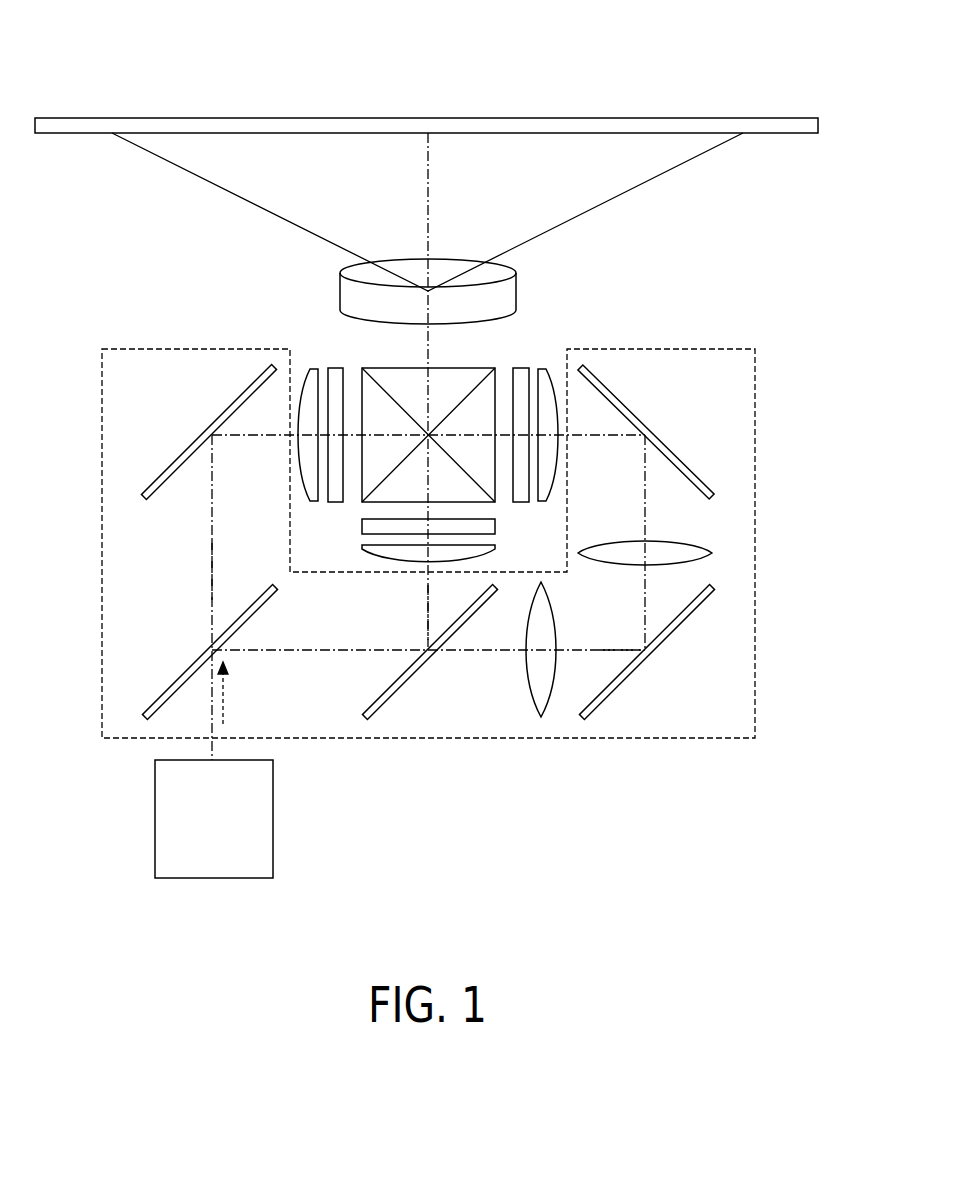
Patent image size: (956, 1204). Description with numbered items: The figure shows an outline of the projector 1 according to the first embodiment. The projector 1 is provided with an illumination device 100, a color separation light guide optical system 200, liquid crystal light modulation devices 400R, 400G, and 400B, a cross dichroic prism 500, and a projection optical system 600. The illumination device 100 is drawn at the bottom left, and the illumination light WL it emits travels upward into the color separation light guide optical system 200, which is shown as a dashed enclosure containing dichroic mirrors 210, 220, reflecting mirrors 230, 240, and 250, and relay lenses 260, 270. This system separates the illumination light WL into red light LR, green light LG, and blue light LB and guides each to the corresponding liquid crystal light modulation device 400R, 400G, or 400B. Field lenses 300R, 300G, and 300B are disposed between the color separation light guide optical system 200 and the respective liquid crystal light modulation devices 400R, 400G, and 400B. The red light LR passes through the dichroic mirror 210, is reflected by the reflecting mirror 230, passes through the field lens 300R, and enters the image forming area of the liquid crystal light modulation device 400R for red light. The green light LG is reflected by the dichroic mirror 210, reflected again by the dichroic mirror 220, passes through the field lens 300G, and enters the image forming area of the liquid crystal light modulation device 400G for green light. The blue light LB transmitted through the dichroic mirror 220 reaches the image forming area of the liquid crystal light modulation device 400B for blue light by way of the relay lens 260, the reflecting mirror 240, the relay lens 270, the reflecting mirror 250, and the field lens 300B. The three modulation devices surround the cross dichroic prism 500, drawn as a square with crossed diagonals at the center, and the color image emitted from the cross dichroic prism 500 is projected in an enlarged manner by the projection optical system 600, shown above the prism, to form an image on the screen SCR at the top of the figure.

The projector 1 is at (773, 223).
The illumination device 100 is at (274, 816).
The color separation light guide optical system 200 is at (570, 740).
The dichroic mirror 210 is at (176, 680).
The dichroic mirror 220 is at (408, 684).
The reflecting mirror 230 is at (188, 450).
The reflecting mirror 240 is at (670, 632).
The reflecting mirror 250 is at (672, 448).
The relay lens 260 is at (526, 668).
The relay lens 270 is at (670, 540).
The field lens 300R is at (310, 366).
The field lens 300G is at (367, 553).
The field lens 300B is at (546, 366).
The liquid crystal light modulation device 400R is at (336, 366).
The liquid crystal light modulation device 400G is at (362, 527).
The liquid crystal light modulation device 400B is at (520, 366).
The cross dichroic prism 500 is at (450, 376).
The projection optical system 600 is at (410, 268).
The screen SCR is at (778, 118).
The illumination light WL is at (229, 702).
The red light LR is at (210, 566).
The green light LG is at (426, 608).
The blue light LB is at (608, 648).